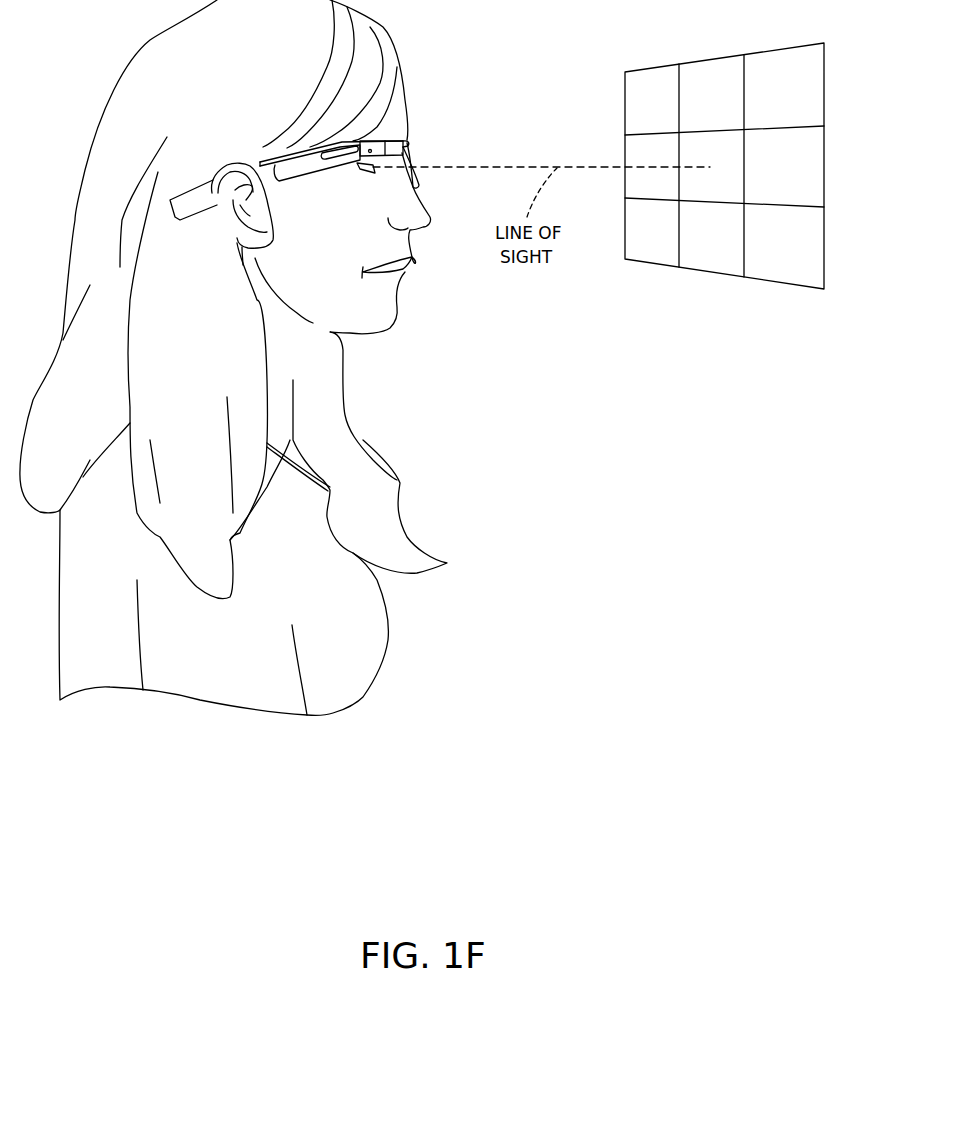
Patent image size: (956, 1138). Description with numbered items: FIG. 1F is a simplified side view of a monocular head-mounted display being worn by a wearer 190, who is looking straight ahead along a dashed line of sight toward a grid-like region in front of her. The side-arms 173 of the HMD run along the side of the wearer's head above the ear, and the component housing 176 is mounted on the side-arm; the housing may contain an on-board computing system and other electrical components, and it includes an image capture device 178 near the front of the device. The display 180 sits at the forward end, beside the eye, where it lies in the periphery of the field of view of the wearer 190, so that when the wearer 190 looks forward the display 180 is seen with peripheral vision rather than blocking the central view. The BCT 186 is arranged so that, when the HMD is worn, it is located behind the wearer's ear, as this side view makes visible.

The wearer 190 is at (115, 97).
The side-arms 173 is at (268, 160).
The component housing 176 is at (305, 183).
The image capture device 178 is at (370, 141).
The display 180 is at (400, 142).
The BCT 186 is at (190, 205).